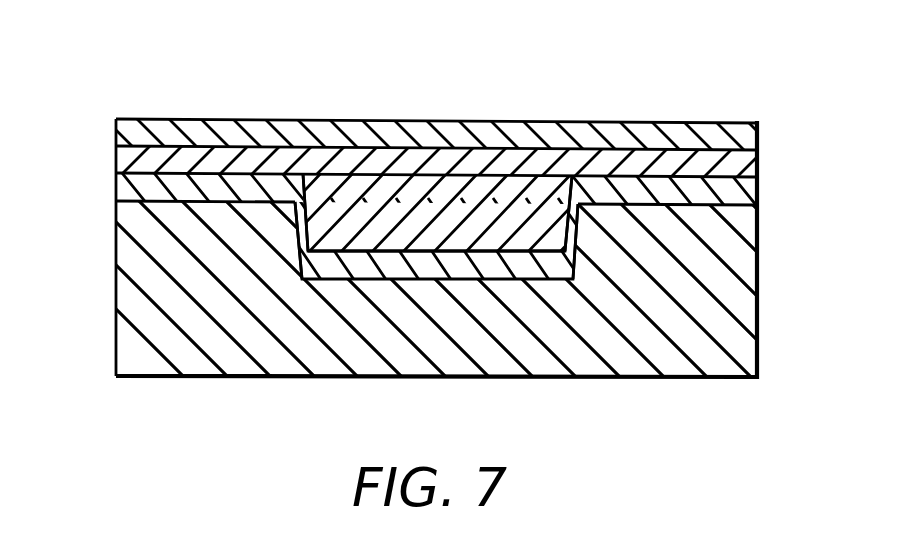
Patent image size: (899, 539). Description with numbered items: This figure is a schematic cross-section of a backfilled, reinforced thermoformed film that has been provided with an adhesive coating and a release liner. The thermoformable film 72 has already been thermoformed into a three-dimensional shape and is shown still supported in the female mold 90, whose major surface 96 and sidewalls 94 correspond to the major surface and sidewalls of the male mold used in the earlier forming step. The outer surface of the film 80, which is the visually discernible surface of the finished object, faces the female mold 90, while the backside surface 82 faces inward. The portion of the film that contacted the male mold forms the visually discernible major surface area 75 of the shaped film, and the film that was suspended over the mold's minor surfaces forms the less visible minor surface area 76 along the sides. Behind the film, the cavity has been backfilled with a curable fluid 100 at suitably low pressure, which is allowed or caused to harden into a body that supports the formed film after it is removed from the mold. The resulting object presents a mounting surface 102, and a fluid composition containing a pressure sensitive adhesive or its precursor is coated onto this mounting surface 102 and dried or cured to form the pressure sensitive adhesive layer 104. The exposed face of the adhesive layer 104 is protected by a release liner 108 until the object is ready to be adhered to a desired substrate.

The thermoformable film 72 is at (737, 193).
The major surface area 75 is at (341, 266).
The minor surface area 76 is at (304, 223).
The outer surface of the film 80 is at (737, 242).
The backside surface of the film 82 is at (695, 177).
The female mold 90 is at (133, 275).
The sidewalls of the female mold 94 is at (577, 252).
The major surface of the female mold 96 is at (455, 277).
The curable fluid 100 is at (537, 192).
The mounting surface 102 is at (345, 178).
The pressure sensitive adhesive layer 104 is at (233, 162).
The release liner 108 is at (433, 137).